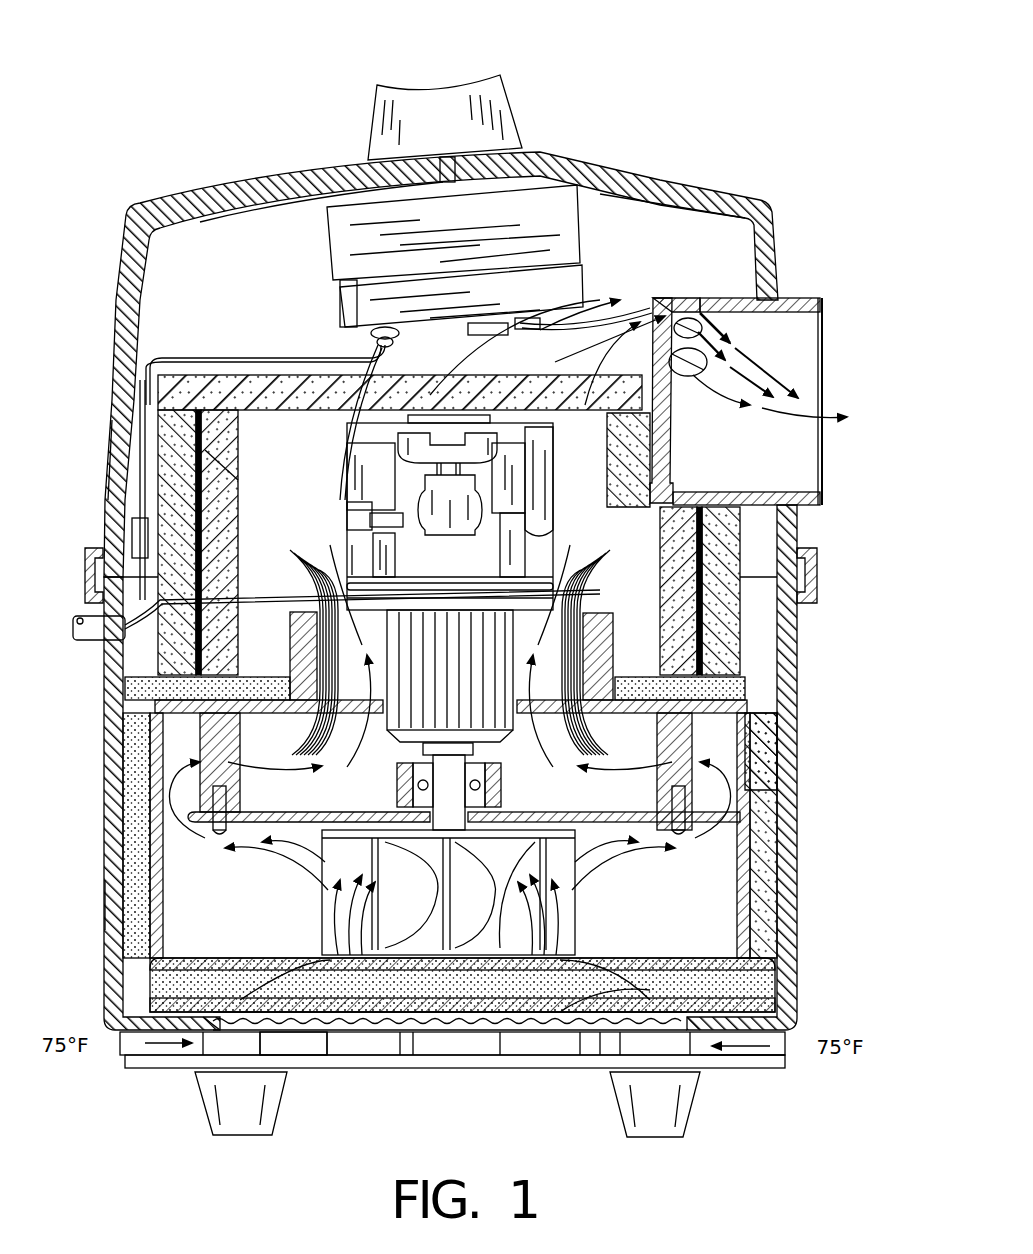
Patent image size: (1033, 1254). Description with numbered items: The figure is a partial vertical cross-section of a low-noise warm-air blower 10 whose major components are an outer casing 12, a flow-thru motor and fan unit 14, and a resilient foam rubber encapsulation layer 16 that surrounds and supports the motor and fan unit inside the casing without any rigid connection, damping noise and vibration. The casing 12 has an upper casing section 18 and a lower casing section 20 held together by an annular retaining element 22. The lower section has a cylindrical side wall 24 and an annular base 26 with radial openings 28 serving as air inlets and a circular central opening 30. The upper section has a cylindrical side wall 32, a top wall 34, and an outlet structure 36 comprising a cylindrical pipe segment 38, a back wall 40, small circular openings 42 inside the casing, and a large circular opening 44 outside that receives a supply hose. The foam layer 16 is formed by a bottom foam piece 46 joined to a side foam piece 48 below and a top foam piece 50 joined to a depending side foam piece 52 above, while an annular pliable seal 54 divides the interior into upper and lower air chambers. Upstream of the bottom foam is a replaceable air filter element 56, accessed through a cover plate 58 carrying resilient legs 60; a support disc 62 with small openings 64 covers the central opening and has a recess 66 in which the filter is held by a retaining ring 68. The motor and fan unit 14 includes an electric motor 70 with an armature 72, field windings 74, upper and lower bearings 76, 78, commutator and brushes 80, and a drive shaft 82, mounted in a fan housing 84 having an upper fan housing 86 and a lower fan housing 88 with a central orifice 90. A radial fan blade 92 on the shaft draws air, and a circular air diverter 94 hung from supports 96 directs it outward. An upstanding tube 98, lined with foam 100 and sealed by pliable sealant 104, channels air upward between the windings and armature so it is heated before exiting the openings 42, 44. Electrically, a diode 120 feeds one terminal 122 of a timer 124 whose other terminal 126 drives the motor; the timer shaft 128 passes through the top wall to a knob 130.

The low-noise air blower 10 is at (640, 106).
The outer casing 12 is at (737, 196).
The flow-thru motor and fan unit 14 is at (612, 632).
The resilient foam rubber encapsulation layer 16 is at (795, 825).
The upper casing section 18 is at (183, 203).
The lower casing section 20 is at (105, 800).
The annular retaining element 22 is at (818, 580).
The side wall 24 is at (106, 902).
The annular base 26 is at (147, 1070).
The radial openings 28 is at (125, 1040).
The circular central opening 30 is at (355, 1047).
The side wall 32 is at (116, 390).
The top wall 34 is at (287, 176).
The outlet structure 36 is at (808, 296).
The cylindrical pipe segment 38 is at (812, 508).
The back wall 40 is at (660, 468).
The small circular openings 42 is at (690, 318).
The large circular opening 44 is at (805, 352).
The circular bottom foam piece 46 is at (650, 990).
The cylindrical side foam piece 48 is at (765, 900).
The circular top foam piece 50 is at (262, 372).
The depending cylindrical side foam piece 52 is at (178, 432).
The annular pliable seal 54 is at (160, 690).
The replaceable circular air filter element 56 is at (555, 1030).
The removable circular cover plate 58 is at (740, 1070).
The resilient feet or legs 60 is at (245, 1118).
The support disc 62 is at (125, 972).
The spaced circular openings 64 is at (215, 1050).
The large circular recess 66 is at (207, 1068).
The removable retaining ring 68 is at (623, 1072).
The electric motor 70 is at (553, 485).
The armature or rotor 72 is at (488, 715).
The field windings or stator 74 is at (342, 752).
The upper bearing 76 is at (398, 450).
The lower bearing 78 is at (502, 786).
The commutator and brushes 80 is at (418, 508).
The drive shaft 82 is at (432, 758).
The fan housing 84 is at (772, 790).
The upper fan housing 86 is at (760, 740).
The lower fan housing 88 is at (752, 855).
The central circular opening or orifice 90 is at (327, 950).
The radial fan blade or impeller 92 is at (448, 892).
The circular air diverter 94 is at (262, 812).
The supports 96 is at (218, 750).
The upstanding pipe or tube 98 is at (725, 660).
The layer of foam 100 is at (232, 515).
The layer of pliable sealant 104 is at (300, 690).
The diode 120 is at (132, 525).
The terminal 122 is at (372, 337).
The timer 124 is at (575, 235).
The terminal 126 is at (518, 322).
The timer shaft 128 is at (450, 183).
The knob or handle 130 is at (430, 100).